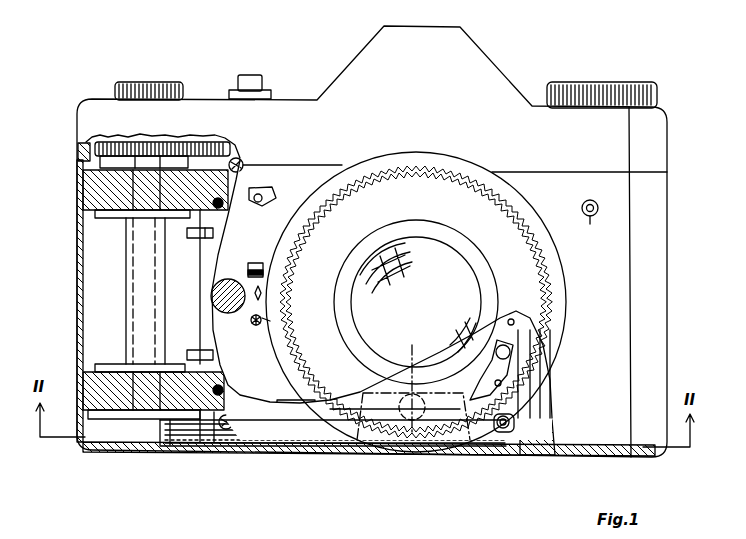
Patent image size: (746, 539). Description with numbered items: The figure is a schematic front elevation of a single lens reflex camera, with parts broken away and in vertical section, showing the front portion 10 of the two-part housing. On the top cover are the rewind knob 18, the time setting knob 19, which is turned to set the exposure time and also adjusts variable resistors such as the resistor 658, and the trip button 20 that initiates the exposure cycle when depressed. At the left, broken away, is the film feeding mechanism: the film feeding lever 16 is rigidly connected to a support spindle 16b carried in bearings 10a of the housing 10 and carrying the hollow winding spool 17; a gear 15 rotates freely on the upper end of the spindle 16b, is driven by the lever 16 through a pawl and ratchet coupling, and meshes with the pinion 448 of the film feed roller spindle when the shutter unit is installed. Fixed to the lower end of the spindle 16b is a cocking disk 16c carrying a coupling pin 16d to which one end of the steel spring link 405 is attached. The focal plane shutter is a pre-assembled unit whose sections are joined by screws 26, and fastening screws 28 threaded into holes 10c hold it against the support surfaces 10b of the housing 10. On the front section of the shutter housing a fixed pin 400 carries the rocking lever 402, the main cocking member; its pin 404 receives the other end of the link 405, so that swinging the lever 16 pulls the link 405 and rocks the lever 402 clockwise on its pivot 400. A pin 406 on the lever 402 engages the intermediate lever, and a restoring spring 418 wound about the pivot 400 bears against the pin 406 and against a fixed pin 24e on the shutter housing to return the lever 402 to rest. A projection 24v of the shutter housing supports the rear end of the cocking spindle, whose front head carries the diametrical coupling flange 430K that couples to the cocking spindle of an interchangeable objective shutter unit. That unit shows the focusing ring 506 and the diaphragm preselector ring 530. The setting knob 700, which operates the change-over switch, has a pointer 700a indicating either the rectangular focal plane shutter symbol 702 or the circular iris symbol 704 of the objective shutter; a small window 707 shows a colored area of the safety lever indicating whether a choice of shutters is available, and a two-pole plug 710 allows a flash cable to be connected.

The front portion of camera housing 10 is at (80, 232).
The bearings 10a is at (130, 205).
The support surfaces 10b is at (105, 207).
The threaded holes 10c is at (222, 396).
The gear 15 is at (100, 142).
The film feeding lever 16 is at (100, 170).
The support spindle 16b is at (136, 264).
The cocking disk 16c is at (105, 419).
The coupling pin 16d is at (168, 432).
The hollow winding spool 17 is at (128, 296).
The rewind knob 18 is at (604, 96).
The time setting knob 19 is at (133, 82).
The trip button 20 is at (250, 75).
The fixed pin 24e is at (513, 314).
The projection of shutter housing 24v is at (372, 440).
The screws 26 is at (226, 430).
The fastening screws 28 is at (222, 207).
The fixed pin 400 is at (512, 352).
The rocking lever 402 is at (488, 366).
The pin 404 is at (505, 432).
The link 405 is at (190, 430).
The pin 406 is at (503, 385).
The restoring spring 418 is at (540, 382).
The diametrical coupling flange 430K is at (411, 379).
The pinion 448 is at (212, 146).
The focusing ring 506 is at (478, 186).
The diaphragm preselector ring 530 is at (411, 178).
The variable resistor 658 is at (255, 187).
The setting knob 700 is at (238, 307).
The pointer 700a is at (254, 325).
The focal plane shutter symbol 702 is at (290, 268).
The iris symbol 704 is at (262, 321).
The window 707 is at (262, 292).
The two-pole plug 710 is at (592, 223).